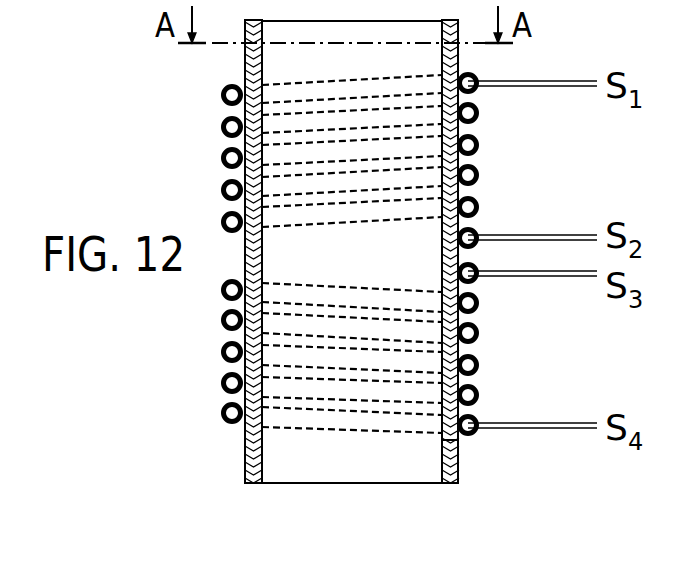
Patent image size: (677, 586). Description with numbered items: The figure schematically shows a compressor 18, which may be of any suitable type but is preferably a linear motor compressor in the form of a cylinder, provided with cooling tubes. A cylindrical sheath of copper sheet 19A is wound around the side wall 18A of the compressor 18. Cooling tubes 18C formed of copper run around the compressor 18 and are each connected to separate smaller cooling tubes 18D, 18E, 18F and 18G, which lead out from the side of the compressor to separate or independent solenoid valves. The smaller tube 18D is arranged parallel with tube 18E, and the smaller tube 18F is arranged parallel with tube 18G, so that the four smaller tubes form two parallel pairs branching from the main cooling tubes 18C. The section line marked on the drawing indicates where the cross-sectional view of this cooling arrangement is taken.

The compressor 18 is at (411, 289).
The side wall 18A is at (442, 460).
The cooling tubes 18C is at (478, 178).
The cooling tube 18D is at (538, 86).
The cooling tube 18E is at (540, 235).
The cooling tube 18F is at (540, 278).
The cooling tube 18G is at (540, 421).
The cylindrical sheath of copper sheet 19A is at (442, 460).